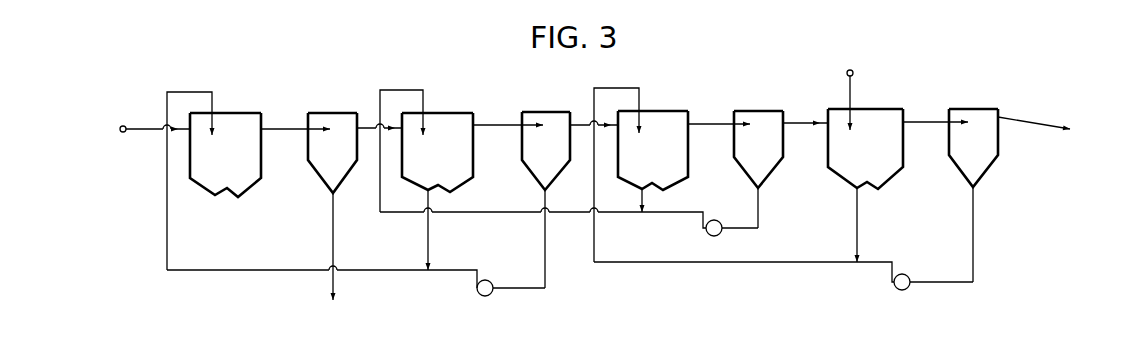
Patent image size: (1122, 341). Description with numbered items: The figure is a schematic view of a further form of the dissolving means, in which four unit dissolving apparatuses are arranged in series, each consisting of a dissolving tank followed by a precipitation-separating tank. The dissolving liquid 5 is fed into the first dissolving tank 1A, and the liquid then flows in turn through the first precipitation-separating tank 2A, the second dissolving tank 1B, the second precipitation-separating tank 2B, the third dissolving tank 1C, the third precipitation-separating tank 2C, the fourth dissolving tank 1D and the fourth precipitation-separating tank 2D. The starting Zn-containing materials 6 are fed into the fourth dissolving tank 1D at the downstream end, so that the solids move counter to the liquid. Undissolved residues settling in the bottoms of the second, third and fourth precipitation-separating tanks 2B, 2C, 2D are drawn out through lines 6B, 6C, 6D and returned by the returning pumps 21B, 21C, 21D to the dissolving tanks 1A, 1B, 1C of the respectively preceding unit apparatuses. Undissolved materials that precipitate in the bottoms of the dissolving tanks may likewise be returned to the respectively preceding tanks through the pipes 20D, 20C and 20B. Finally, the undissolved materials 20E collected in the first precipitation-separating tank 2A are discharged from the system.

The dissolving liquid 5 is at (145, 129).
The starting Zn-containing materials 6 is at (850, 87).
The first dissolving tank 1A is at (262, 158).
The second dissolving tank 1B is at (474, 158).
The third dissolving tank 1C is at (689, 157).
The fourth dissolving tank 1D is at (904, 155).
The first precipitation-separating tank 2A is at (330, 113).
The second precipitation-separating tank 2B is at (540, 112).
The third precipitation-separating tank 2C is at (755, 110).
The fourth precipitation-separating tank 2D is at (968, 108).
The undissolved materials 20E is at (335, 236).
The pipe 20B is at (430, 237).
The pipe 20C is at (644, 194).
The pipe 20D is at (859, 222).
The returning pump 21B is at (491, 283).
The returning pump 21C is at (706, 230).
The returning pump 21D is at (907, 276).
The second stage underflow line 6B is at (546, 248).
The third stage underflow line 6C is at (760, 212).
The fourth stage underflow line 6D is at (975, 222).